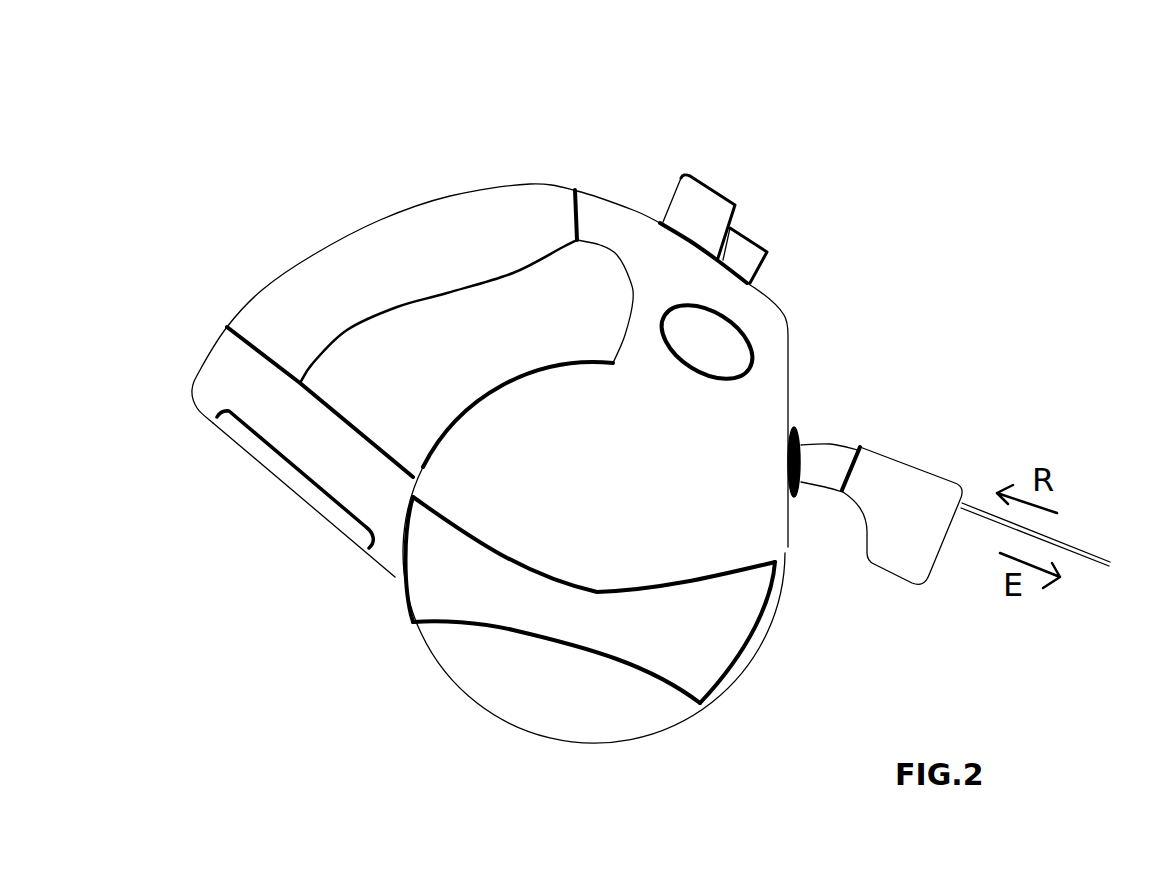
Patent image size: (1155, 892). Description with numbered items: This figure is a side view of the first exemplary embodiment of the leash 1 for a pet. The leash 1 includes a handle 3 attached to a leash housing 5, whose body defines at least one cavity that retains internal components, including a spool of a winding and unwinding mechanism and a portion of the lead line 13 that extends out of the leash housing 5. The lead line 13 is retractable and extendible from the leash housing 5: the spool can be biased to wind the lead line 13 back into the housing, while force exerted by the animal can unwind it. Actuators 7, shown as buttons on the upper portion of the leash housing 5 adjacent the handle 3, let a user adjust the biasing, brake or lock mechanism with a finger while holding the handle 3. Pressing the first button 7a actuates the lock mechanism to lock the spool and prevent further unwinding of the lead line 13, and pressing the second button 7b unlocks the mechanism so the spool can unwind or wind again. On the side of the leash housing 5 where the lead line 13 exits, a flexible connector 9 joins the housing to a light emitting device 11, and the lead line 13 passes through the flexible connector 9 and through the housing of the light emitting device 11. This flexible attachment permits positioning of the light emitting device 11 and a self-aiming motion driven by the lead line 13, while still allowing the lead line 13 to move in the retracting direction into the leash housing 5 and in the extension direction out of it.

The leash 1 is at (460, 140).
The handle 3 is at (295, 260).
The leash housing 5 is at (625, 752).
The actuators 7 is at (718, 191).
The first button 7a is at (763, 271).
The second button 7b is at (665, 192).
The flexible connector 9 is at (827, 440).
The light emitting device 11 is at (897, 580).
The lead line 13 is at (1083, 540).